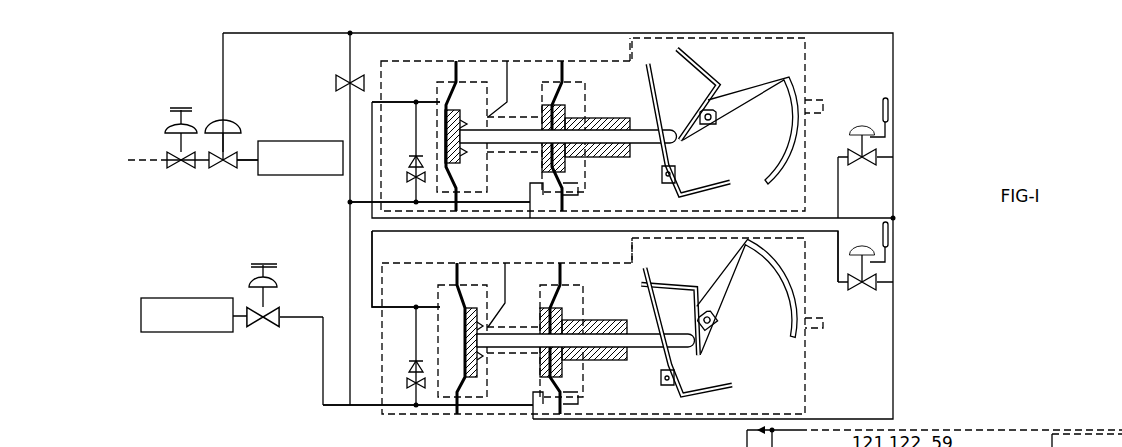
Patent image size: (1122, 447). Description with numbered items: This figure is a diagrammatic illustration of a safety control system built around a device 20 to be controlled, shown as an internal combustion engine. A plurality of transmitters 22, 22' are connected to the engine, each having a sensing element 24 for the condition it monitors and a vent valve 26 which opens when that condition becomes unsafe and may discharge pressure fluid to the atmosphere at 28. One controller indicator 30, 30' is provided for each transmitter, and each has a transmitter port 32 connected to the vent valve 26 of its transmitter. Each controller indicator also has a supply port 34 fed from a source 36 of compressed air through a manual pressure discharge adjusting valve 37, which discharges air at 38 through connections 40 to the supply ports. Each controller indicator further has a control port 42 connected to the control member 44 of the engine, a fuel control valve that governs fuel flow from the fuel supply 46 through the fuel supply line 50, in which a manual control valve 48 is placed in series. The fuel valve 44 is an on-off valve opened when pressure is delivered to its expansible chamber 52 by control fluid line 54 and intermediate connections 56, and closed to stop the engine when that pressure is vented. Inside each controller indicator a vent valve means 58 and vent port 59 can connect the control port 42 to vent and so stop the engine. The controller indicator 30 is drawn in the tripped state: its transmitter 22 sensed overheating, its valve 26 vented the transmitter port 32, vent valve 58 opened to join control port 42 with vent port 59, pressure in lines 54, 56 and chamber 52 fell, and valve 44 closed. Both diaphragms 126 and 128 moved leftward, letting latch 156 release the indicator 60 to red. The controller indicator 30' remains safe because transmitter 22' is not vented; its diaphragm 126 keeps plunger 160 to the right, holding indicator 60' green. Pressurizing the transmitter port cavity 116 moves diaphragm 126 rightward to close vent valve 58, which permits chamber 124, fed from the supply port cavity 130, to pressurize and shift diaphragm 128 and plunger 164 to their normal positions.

The device 20 is at (277, 172).
The transmitter 22 is at (883, 187).
The transmitter 22' is at (886, 276).
The sensing element 24 is at (888, 112).
The vent valve 26 is at (855, 162).
The atmosphere discharge 28 is at (882, 162).
The controller indicator 30 is at (578, 48).
The controller indicator 30' is at (579, 250).
The transmitter port 32 is at (378, 101).
The supply port 34 is at (377, 203).
The source of pressure fluid 36 is at (187, 333).
The pressure discharge adjusting valve 37 is at (285, 311).
The discharge 38 is at (296, 318).
The connections 40 is at (322, 373).
The control port 42 is at (534, 207).
The control member 44 is at (217, 167).
The fuel supply 46 is at (153, 162).
The manual control valve 48 is at (170, 167).
The fuel supply line 50 is at (247, 162).
The expansible chamber 52 is at (236, 128).
The control fluid line 54 is at (320, 35).
The intermediate connections 56 is at (223, 93).
The vent valve means 58 is at (445, 150).
The vent port 59 is at (506, 54).
The indicator means 60 is at (756, 116).
The indicator means 60' is at (738, 301).
The transmitter port cavity 116 is at (443, 85).
The chamber 124 is at (543, 383).
The diaphragm 126 is at (455, 187).
The diaphragm 128 is at (567, 183).
The supply port cavity 130 is at (577, 95).
The latch 156 is at (652, 97).
The plunger 160 is at (665, 345).
The plunger 164 is at (610, 322).